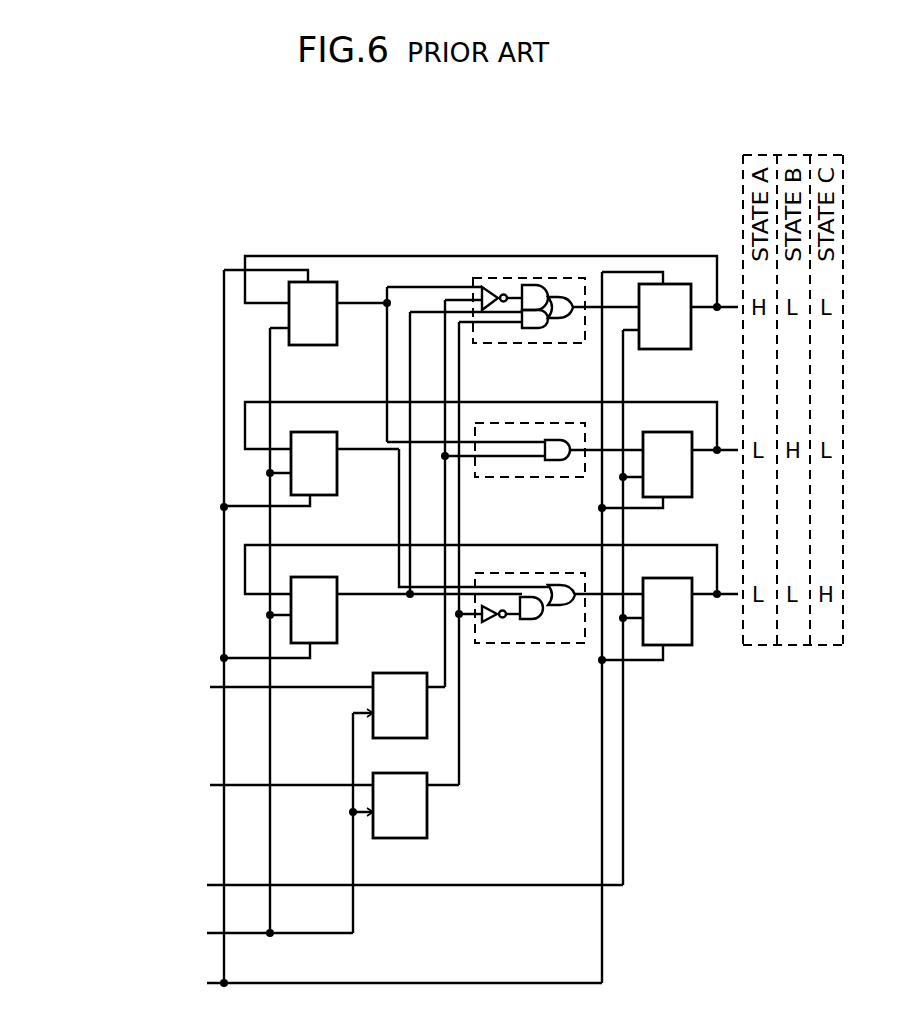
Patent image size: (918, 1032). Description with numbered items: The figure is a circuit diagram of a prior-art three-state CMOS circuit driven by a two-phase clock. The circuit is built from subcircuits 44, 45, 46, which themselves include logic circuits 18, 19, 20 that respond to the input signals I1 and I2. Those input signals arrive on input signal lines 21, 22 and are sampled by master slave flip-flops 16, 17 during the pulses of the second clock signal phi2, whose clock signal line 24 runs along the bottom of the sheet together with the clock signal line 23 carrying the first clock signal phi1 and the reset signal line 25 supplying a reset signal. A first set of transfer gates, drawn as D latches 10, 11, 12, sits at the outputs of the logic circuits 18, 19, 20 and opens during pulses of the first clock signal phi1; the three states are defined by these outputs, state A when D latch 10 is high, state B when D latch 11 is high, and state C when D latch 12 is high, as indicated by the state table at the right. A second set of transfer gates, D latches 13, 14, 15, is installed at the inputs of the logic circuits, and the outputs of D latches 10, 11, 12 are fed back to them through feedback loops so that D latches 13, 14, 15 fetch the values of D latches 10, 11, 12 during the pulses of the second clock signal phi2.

The D latch 10 is at (663, 285).
The D latch 11 is at (667, 432).
The D latch 12 is at (667, 578).
The D latch 13 is at (328, 283).
The D latch 14 is at (322, 432).
The D latch 15 is at (318, 577).
The master slave flip-flop 16 is at (390, 673).
The master slave flip-flop 17 is at (413, 773).
The logic circuit 18 is at (545, 278).
The logic circuit 19 is at (535, 423).
The logic circuit 20 is at (535, 573).
The input signal line 21 is at (315, 686).
The input signal line 22 is at (298, 783).
The clock signal line 23 is at (305, 884).
The clock signal line 24 is at (305, 931).
The reset signal line 25 is at (320, 980).
The subcircuit 44 is at (237, 296).
The subcircuit 45 is at (237, 436).
The subcircuit 46 is at (237, 569).